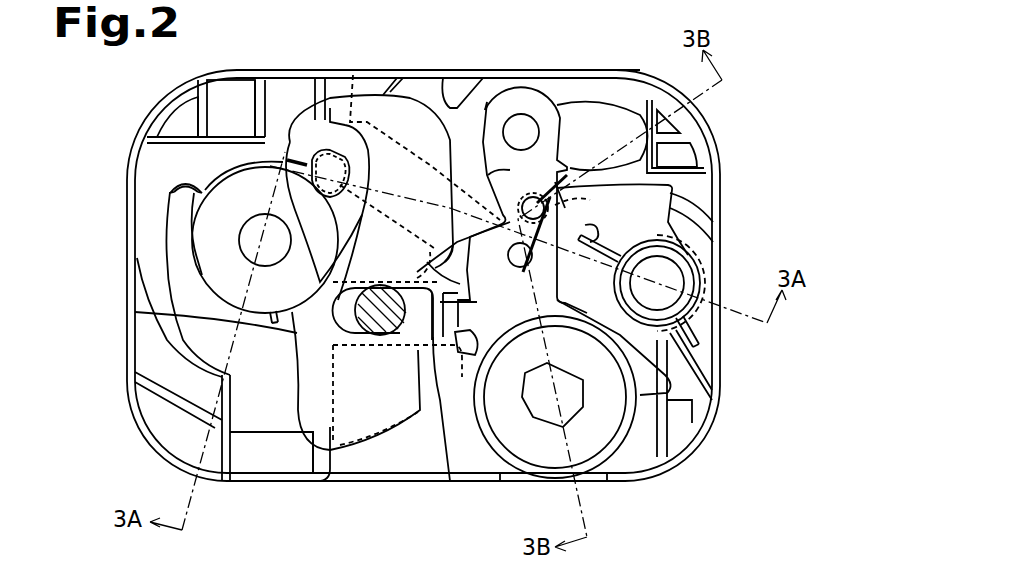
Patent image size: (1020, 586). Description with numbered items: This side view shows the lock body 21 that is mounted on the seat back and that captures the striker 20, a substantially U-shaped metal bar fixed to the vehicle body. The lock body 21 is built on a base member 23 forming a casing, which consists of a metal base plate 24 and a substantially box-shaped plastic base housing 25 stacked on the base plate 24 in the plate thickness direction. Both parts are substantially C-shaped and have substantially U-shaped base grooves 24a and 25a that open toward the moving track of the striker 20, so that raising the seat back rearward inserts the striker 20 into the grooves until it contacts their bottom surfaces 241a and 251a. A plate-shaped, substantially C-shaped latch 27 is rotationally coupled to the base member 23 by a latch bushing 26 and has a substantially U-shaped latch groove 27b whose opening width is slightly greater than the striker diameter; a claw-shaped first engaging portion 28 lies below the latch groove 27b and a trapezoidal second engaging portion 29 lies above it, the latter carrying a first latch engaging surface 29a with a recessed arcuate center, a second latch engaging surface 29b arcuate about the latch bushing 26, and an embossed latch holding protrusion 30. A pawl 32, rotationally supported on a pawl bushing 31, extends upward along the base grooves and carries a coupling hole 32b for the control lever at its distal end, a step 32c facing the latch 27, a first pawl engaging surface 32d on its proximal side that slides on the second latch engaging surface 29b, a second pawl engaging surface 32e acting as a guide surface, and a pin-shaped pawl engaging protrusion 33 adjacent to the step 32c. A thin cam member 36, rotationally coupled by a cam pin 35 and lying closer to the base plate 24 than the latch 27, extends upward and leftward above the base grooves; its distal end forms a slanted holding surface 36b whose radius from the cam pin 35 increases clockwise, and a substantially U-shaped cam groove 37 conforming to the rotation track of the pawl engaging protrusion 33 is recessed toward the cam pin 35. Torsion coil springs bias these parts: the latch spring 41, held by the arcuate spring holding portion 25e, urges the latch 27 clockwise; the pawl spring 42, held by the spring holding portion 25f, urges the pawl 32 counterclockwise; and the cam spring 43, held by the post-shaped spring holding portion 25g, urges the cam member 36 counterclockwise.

The striker 20 is at (405, 330).
The lock body 21 is at (655, 20).
The base member 23 is at (460, 283).
The base plate 24 is at (460, 283).
The base housing 25 is at (703, 433).
The base groove 25a is at (330, 480).
The base groove 24a is at (335, 457).
The spring holding portion 25e is at (168, 200).
The spring holding portion 25f is at (498, 358).
The spring holding portion 25g is at (690, 360).
The latch bushing 26 is at (207, 245).
The latch 27 is at (307, 447).
The latch groove 27b is at (353, 330).
The first engaging portion 28 is at (381, 424).
The second engaging portion 29 is at (452, 120).
The first latch engaging surface 29a is at (418, 259).
The second latch engaging surface 29b is at (480, 110).
The latch holding protrusion 30 is at (313, 145).
The pawl bushing 31 is at (540, 460).
The pawl 32 is at (543, 120).
The coupling hole 32b is at (523, 115).
The step 32c is at (457, 205).
The first pawl engaging surface 32d is at (474, 272).
The second pawl engaging surface 32e is at (488, 175).
The pawl engaging protrusion 33 is at (590, 200).
The cam pin 35 is at (700, 281).
The cam member 36 is at (713, 205).
The holding surface 36b is at (353, 75).
The cam groove 37 is at (598, 223).
The latch spring 41 is at (178, 173).
The pawl spring 42 is at (418, 423).
The cam spring 43 is at (700, 335).
The bottom surface 251a is at (162, 325).
The bottom surface 241a is at (165, 311).